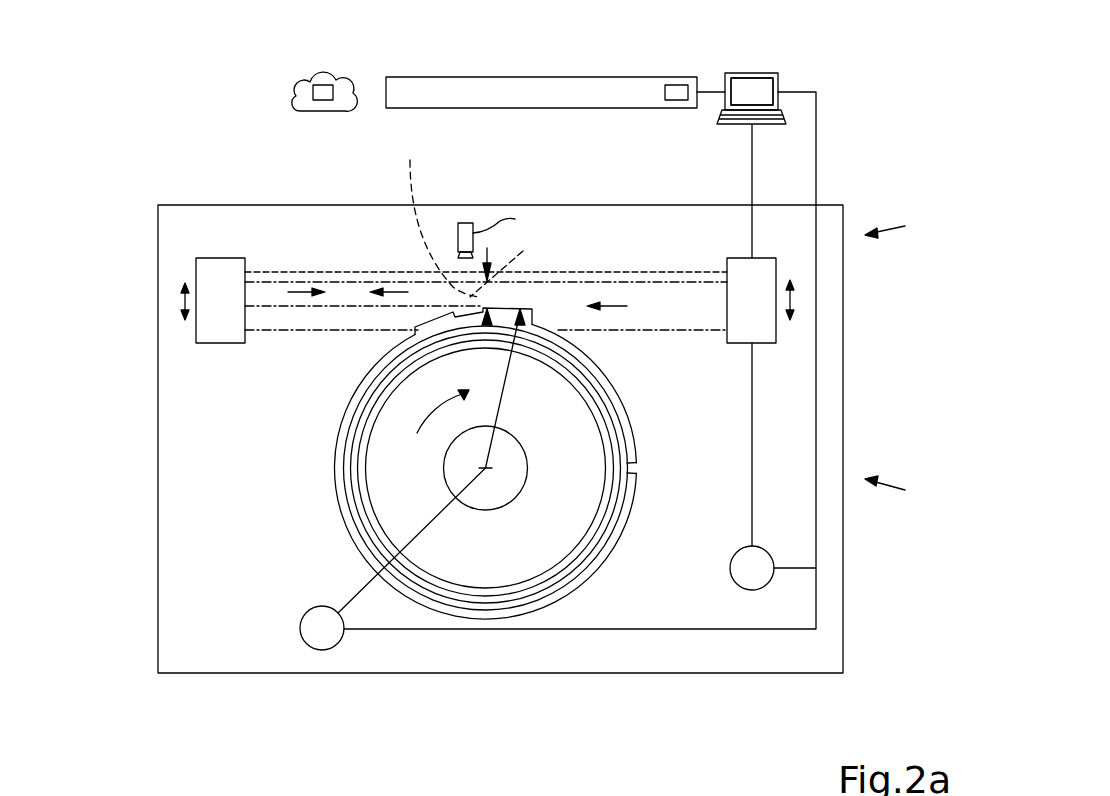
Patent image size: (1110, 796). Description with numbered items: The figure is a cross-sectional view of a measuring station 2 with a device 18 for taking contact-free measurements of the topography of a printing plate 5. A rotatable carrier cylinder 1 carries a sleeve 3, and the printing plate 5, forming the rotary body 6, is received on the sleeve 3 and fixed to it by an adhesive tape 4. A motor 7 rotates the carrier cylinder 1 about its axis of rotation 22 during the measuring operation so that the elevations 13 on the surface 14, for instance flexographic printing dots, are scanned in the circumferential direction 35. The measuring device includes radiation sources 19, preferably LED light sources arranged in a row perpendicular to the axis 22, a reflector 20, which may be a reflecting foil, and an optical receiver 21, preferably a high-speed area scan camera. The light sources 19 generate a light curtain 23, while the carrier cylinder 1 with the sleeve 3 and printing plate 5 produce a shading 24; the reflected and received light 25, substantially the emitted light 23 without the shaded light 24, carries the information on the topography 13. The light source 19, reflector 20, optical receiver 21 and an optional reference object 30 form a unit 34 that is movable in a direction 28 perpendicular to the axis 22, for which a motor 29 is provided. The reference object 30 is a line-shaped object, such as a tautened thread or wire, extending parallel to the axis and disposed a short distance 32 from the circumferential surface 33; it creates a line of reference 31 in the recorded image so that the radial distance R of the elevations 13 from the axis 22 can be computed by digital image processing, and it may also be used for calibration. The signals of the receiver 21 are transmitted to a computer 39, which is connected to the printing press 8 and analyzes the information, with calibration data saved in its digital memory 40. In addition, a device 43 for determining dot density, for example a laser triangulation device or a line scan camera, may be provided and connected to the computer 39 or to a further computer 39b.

The carrier cylinder 1 is at (428, 552).
The measuring station 2 is at (757, 676).
The sleeve 3 is at (450, 587).
The adhesive tape 4 is at (613, 515).
The printing plate 5 is at (486, 538).
The rotary body 6 is at (572, 582).
The motor 7 is at (322, 652).
The printing press 8 is at (425, 92).
The elevations 13 is at (440, 312).
The surface 14 is at (608, 557).
The device 18 is at (905, 492).
The radiation sources 19 is at (835, 332).
The reflector 20 is at (222, 277).
The optical receiver 21 is at (763, 332).
The axis of rotation 22 is at (490, 475).
The light curtain 23 is at (398, 290).
The shading 24 is at (272, 323).
The received light 25 is at (298, 290).
The direction 28 is at (790, 302).
The motor 29 is at (773, 582).
The reference object 30 is at (492, 280).
The line of reference 31 is at (673, 273).
The distance 32 is at (489, 268).
The circumferential surface 33 is at (350, 466).
The unit 34 is at (905, 221).
The circumferential direction 35 is at (427, 410).
The computer 39 is at (733, 71).
The further computer 39b is at (740, 73).
The digital memory 40 is at (318, 92).
The device for determining dot density 43 is at (465, 240).
The radial distance R is at (508, 380).